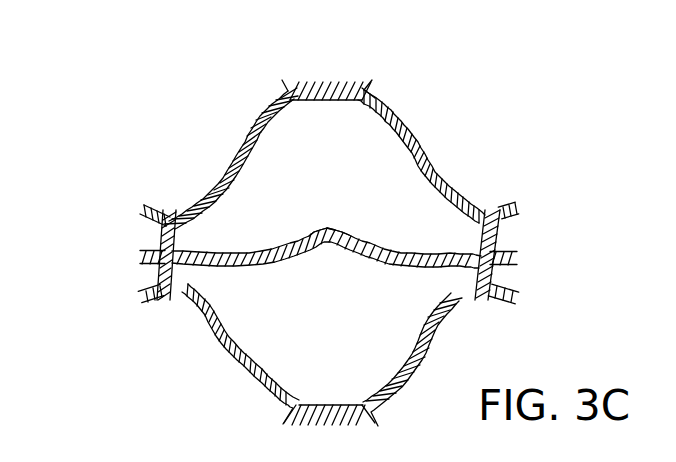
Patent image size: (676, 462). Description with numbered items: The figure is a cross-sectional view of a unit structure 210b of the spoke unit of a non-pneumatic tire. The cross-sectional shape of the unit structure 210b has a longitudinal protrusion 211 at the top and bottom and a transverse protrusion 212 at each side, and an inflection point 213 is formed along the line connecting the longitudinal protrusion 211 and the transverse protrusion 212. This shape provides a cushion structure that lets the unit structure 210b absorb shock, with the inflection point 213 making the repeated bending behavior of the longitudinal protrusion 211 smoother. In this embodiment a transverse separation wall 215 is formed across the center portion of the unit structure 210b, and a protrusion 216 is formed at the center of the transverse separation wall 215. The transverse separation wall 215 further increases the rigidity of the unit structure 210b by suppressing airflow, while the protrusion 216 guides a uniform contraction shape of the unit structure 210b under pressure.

The unit structure 210b is at (130, 92).
The longitudinal protrusion 211 is at (320, 90).
The transverse protrusion 212 is at (152, 232).
The inflection point 213 is at (245, 155).
The transverse separation wall 215 is at (378, 268).
The protrusion 216 is at (328, 228).